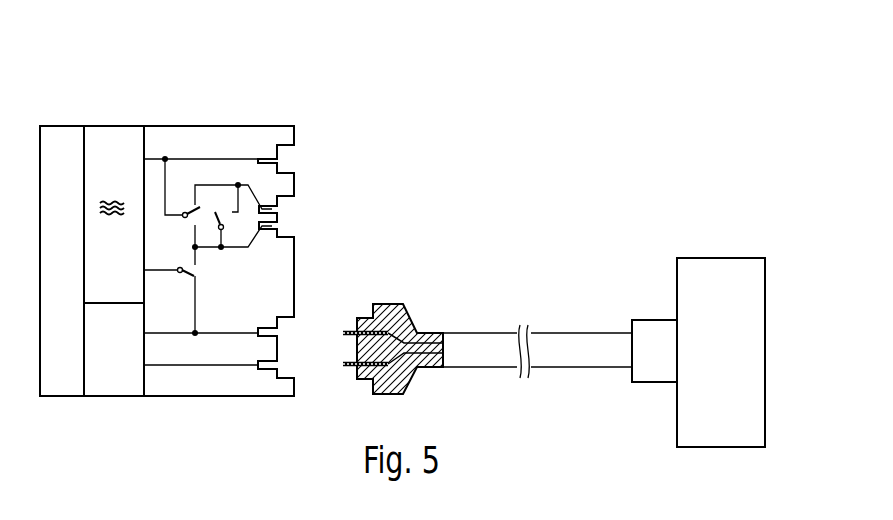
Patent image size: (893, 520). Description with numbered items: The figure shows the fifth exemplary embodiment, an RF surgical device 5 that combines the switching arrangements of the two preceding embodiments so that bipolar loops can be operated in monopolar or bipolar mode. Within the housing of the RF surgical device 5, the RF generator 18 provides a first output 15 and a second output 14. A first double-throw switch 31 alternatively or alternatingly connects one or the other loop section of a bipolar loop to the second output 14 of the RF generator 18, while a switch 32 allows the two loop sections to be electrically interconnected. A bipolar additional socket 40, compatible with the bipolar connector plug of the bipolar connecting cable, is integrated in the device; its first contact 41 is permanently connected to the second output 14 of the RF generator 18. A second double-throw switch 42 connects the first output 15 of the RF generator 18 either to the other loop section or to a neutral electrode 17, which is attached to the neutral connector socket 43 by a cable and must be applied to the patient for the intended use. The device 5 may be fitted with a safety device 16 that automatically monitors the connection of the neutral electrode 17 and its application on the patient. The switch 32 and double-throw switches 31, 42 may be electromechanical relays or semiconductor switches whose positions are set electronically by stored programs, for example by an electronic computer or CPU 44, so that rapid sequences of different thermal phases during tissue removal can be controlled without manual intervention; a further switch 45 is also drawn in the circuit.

The RF surgical device 5 is at (226, 114).
The second output 14 is at (157, 143).
The first output 15 is at (150, 268).
The safety device 16 is at (108, 373).
The neutral electrode 17 is at (733, 364).
The RF generator 18 is at (110, 142).
The first double-throw switch 31 is at (186, 207).
The switch 32 is at (222, 203).
The bipolar additional socket 40 is at (287, 218).
The first contact 41 is at (270, 201).
The second double-throw switch 42 is at (198, 276).
The neutral connector socket 43 is at (292, 348).
The CPU 44 is at (60, 373).
The switch 45 is at (264, 228).